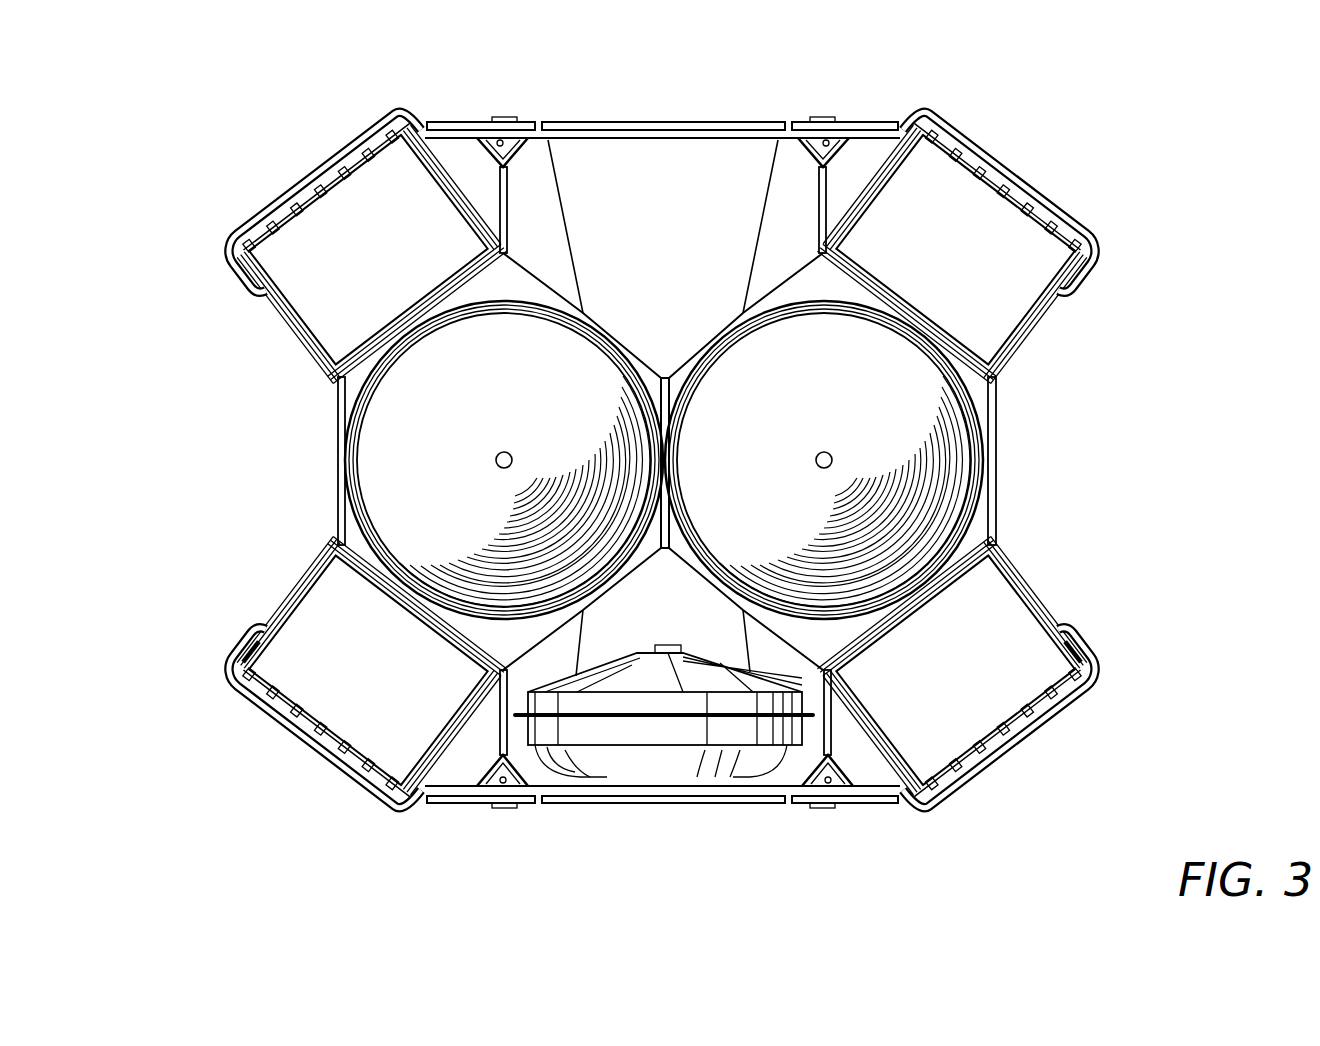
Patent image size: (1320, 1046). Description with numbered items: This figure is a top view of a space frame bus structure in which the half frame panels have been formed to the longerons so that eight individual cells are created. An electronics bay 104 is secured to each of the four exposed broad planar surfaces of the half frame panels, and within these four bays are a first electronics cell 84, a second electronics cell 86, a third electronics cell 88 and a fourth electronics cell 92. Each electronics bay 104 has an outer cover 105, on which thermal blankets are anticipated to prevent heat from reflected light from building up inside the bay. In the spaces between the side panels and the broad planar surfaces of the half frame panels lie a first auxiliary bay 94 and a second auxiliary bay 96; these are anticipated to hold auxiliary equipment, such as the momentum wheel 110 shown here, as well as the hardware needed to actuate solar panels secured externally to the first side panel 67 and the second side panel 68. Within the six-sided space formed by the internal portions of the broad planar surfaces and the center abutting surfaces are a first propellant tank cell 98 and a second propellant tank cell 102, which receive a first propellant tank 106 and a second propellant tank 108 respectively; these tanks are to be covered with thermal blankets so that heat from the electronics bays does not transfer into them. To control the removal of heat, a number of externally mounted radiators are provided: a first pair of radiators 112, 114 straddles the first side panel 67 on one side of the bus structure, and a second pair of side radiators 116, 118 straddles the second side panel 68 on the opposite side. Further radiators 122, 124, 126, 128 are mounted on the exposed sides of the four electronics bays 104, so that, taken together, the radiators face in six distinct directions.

The first side panel 67 is at (672, 788).
The second side panel 68 is at (706, 120).
The first electronics cell 84 is at (308, 280).
The second electronics cell 86 is at (998, 310).
The third electronics cell 88 is at (1027, 635).
The fourth electronics cell 92 is at (335, 635).
The first auxiliary bay 94 is at (797, 767).
The second auxiliary bay 96 is at (628, 160).
The first propellant tank cell 98 is at (355, 540).
The second propellant tank cell 102 is at (977, 533).
The electronics bay 104 is at (257, 654).
The outer cover 105 is at (298, 172).
The first propellant tank 106 is at (400, 447).
The second propellant tank 108 is at (918, 410).
The momentum wheel 110 is at (628, 735).
The radiator 112 is at (488, 802).
The radiator 114 is at (867, 800).
The side radiator 116 is at (468, 120).
The side radiator 118 is at (862, 120).
The radiator 122 is at (297, 335).
The radiator 124 is at (313, 565).
The radiator 126 is at (1063, 300).
The radiator 128 is at (1033, 577).